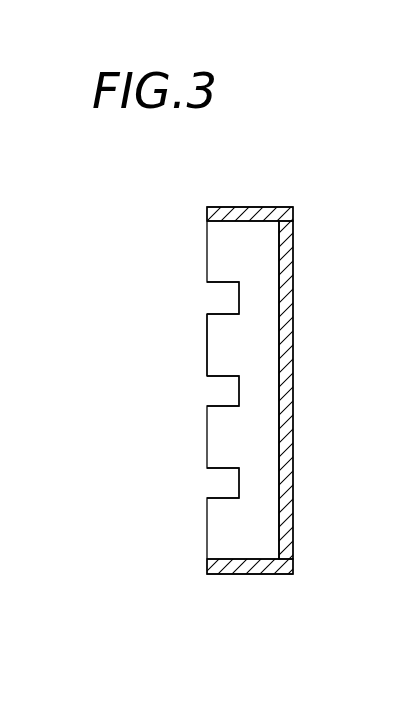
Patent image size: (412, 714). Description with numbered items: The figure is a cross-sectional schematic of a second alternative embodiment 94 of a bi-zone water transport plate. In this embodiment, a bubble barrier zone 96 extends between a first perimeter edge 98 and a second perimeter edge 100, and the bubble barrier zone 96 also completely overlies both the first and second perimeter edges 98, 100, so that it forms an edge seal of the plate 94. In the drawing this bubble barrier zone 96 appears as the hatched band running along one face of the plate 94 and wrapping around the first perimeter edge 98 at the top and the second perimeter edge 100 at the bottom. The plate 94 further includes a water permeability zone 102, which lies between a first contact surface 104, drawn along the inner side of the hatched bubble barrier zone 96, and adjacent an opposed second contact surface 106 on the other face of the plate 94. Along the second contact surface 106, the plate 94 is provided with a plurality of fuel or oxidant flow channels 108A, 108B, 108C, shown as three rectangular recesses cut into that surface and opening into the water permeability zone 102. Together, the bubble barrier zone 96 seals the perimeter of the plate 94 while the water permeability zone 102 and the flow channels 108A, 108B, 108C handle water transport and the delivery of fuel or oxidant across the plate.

The second alternative embodiment of the bi-zone water transport plate 94 is at (342, 194).
The bubble barrier zone 96 is at (295, 333).
The first perimeter edge 98 is at (247, 207).
The second perimeter edge 100 is at (243, 575).
The water permeability zone 102 is at (228, 438).
The first contact surface 104 is at (295, 432).
The second contact surface 106 is at (207, 347).
The fuel or oxidant flow channel 108A is at (204, 297).
The fuel or oxidant flow channel 108B is at (204, 391).
The fuel or oxidant flow channel 108C is at (204, 483).